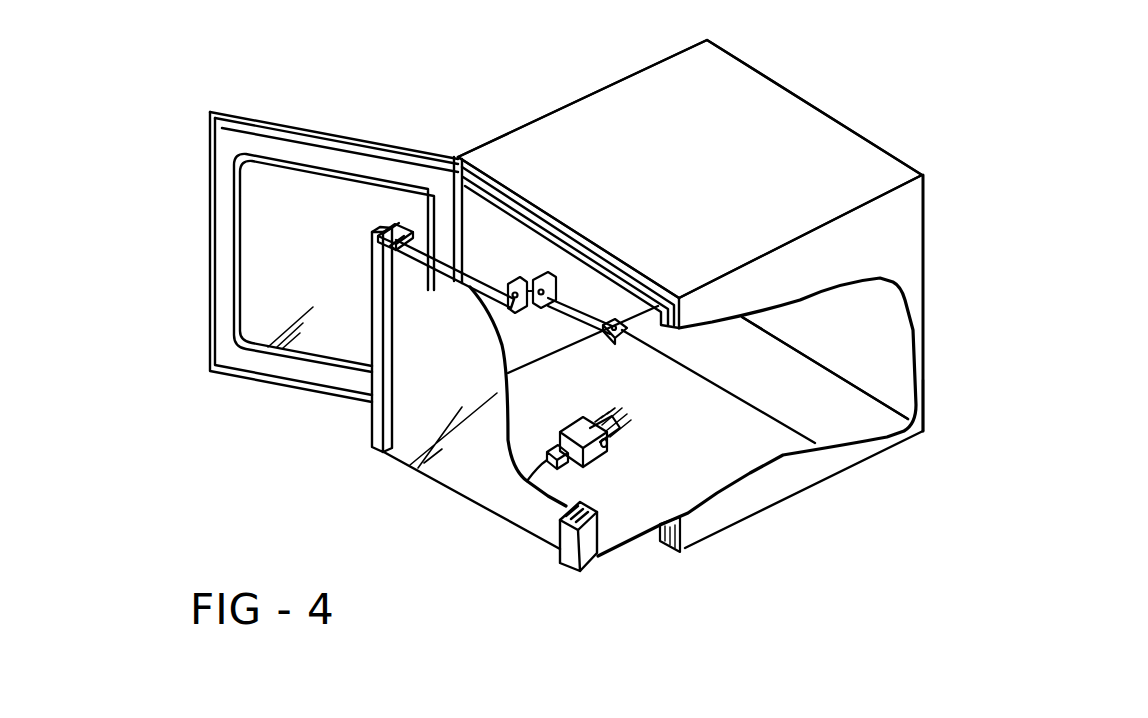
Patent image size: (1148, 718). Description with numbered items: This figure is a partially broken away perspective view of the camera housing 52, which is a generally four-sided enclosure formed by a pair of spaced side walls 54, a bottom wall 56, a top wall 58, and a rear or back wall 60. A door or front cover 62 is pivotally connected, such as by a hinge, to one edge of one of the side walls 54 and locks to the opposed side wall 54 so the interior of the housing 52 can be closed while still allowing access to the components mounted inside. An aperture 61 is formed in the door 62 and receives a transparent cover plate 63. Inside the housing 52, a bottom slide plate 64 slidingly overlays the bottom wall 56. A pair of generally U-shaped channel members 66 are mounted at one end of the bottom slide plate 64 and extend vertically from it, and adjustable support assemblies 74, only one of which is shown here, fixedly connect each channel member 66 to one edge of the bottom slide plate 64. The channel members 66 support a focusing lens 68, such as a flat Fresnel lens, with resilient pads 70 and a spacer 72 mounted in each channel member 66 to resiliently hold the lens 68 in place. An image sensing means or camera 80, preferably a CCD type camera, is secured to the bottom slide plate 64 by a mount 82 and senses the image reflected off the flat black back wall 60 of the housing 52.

The housing 52 is at (616, 62).
The side walls 54 is at (483, 196).
The bottom wall 56 is at (863, 423).
The top wall 58 is at (796, 113).
The rear or back wall 60 is at (900, 352).
The aperture 61 is at (240, 187).
The door or front cover 62 is at (313, 131).
The transparent cover plate 63 is at (270, 177).
The bottom slide plate 64 is at (613, 533).
The U-shaped channel members 66 is at (374, 427).
The focusing lens 68 is at (460, 474).
The resilient pads 70 is at (400, 221).
The spacer 72 is at (390, 227).
The adjustable support assemblies 74 is at (522, 281).
The camera 80 is at (645, 395).
The mount 82 is at (618, 457).